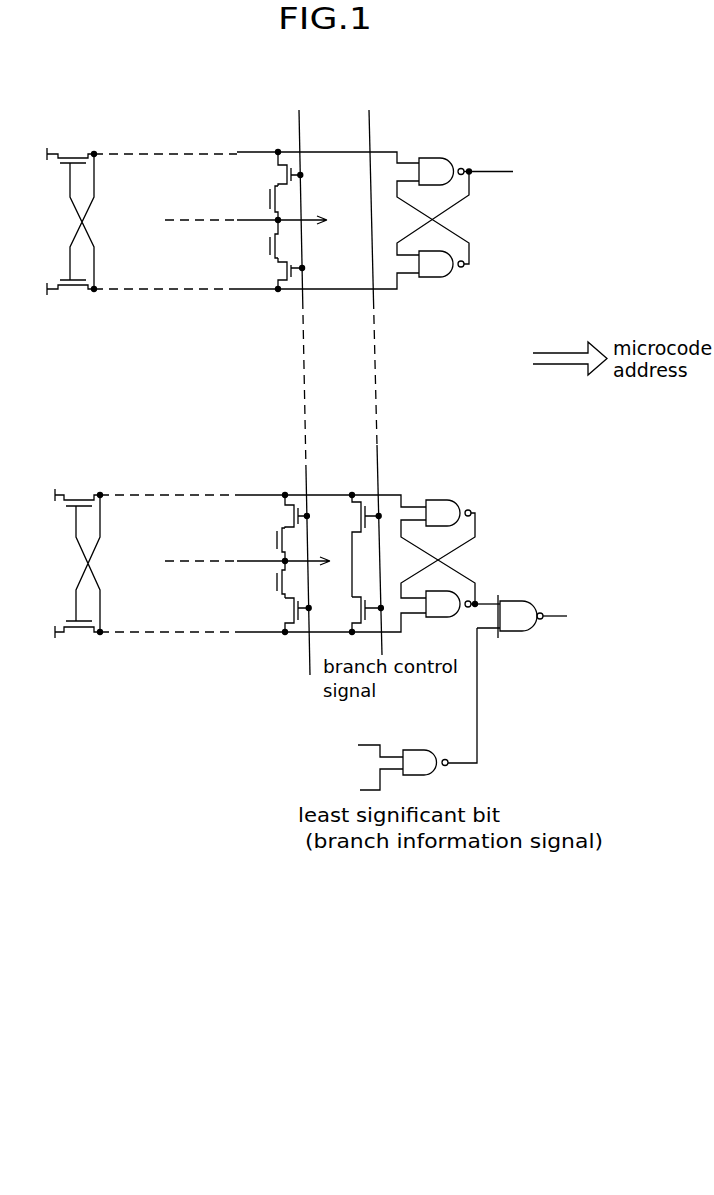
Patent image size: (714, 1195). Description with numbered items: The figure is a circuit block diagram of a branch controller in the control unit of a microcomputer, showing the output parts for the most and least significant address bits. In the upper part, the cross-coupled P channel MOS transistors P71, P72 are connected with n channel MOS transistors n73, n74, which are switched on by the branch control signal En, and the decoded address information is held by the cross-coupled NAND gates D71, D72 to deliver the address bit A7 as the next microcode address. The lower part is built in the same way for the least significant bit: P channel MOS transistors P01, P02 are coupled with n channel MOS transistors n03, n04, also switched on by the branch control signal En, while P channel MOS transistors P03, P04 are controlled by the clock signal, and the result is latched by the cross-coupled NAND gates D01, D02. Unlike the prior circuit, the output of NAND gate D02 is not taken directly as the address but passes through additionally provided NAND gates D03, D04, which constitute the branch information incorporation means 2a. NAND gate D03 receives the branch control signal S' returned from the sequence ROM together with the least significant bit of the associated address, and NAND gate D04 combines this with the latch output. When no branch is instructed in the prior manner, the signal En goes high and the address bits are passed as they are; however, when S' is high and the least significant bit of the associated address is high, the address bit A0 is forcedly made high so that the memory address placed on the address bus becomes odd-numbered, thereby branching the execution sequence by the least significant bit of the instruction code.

The P channel MOS transistor P71 is at (72, 148).
The P channel MOS transistor P72 is at (72, 299).
The n channel MOS transistor n73 is at (281, 161).
The n channel MOS transistor n74 is at (296, 271).
The NAND gate D71 is at (441, 160).
The NAND gate D72 is at (441, 276).
The P channel MOS transistor P01 is at (79, 491).
The P channel MOS transistor P02 is at (79, 638).
The n channel MOS transistor n03 is at (300, 504).
The n channel MOS transistor n04 is at (271, 615).
The P channel MOS transistor P03 is at (349, 546).
The P channel MOS transistor P04 is at (350, 614).
The NAND gate D01 is at (448, 501).
The NAND gate D02 is at (448, 617).
The NAND gate D03 is at (425, 774).
The NAND gate D04 is at (521, 605).
The branch information incorporation means 2a is at (496, 668).
The branch control signal En is at (298, 377).
The address signal A7 is at (504, 171).
The address signal A0 is at (568, 615).